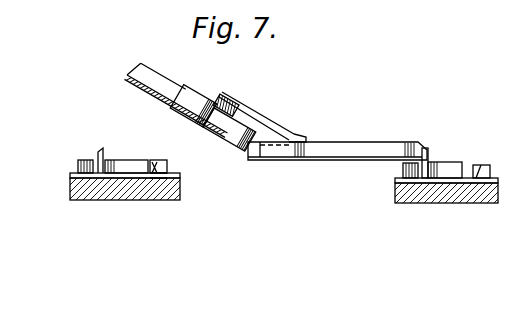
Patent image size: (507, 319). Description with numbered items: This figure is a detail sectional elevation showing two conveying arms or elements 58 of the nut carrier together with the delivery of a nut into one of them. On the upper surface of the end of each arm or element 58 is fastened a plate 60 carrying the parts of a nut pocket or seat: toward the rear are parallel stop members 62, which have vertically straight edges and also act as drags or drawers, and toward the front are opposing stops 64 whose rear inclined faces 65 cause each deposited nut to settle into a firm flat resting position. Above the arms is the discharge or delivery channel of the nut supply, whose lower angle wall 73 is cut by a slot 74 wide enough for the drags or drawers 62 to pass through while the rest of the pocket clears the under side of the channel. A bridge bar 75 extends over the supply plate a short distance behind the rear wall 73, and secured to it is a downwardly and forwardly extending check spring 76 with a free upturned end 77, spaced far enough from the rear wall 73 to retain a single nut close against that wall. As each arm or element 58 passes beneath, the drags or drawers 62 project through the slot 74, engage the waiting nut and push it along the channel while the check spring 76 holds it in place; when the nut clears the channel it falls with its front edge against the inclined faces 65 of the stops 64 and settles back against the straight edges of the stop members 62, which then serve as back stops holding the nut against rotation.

The arm or element 58 is at (114, 200).
The plate 60 is at (180, 182).
The stop members 62 is at (95, 158).
The stops 64 is at (162, 176).
The rear inclined faces 65 is at (155, 163).
The lower angle wall 73 is at (246, 148).
The slot 74 is at (332, 159).
The bridge bar 75 is at (217, 100).
The check spring 76 is at (272, 113).
The free upturned end 77 is at (303, 136).